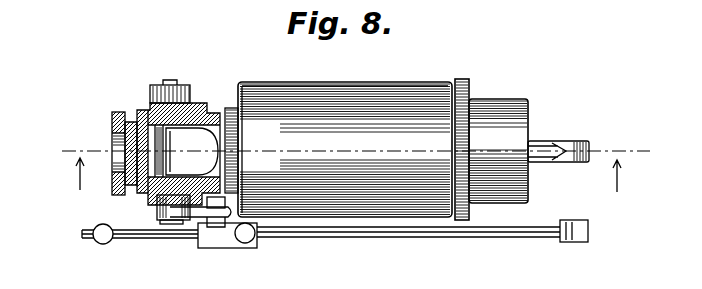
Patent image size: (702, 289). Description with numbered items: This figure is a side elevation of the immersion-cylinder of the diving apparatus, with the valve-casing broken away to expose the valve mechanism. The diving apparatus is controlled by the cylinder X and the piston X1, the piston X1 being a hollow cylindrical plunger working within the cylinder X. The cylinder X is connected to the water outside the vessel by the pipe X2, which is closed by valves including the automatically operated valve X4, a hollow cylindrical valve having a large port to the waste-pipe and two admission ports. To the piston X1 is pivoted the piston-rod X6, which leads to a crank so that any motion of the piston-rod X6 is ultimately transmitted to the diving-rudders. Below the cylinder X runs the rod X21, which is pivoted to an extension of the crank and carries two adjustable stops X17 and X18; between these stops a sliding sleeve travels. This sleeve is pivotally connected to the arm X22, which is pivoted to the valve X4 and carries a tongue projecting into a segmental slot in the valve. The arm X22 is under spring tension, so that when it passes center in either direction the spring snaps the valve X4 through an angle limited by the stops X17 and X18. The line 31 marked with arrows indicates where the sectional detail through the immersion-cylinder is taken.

The cylinder X is at (338, 149).
The piston X1 is at (491, 149).
The pipe X2 is at (112, 128).
The valve X4 is at (150, 205).
The piston-rod X6 is at (548, 142).
The adjustable stop X17 is at (257, 245).
The adjustable stop X18 is at (94, 240).
The rod X21 is at (463, 238).
The arm X22 is at (193, 214).
The section line 31 is at (354, 166).